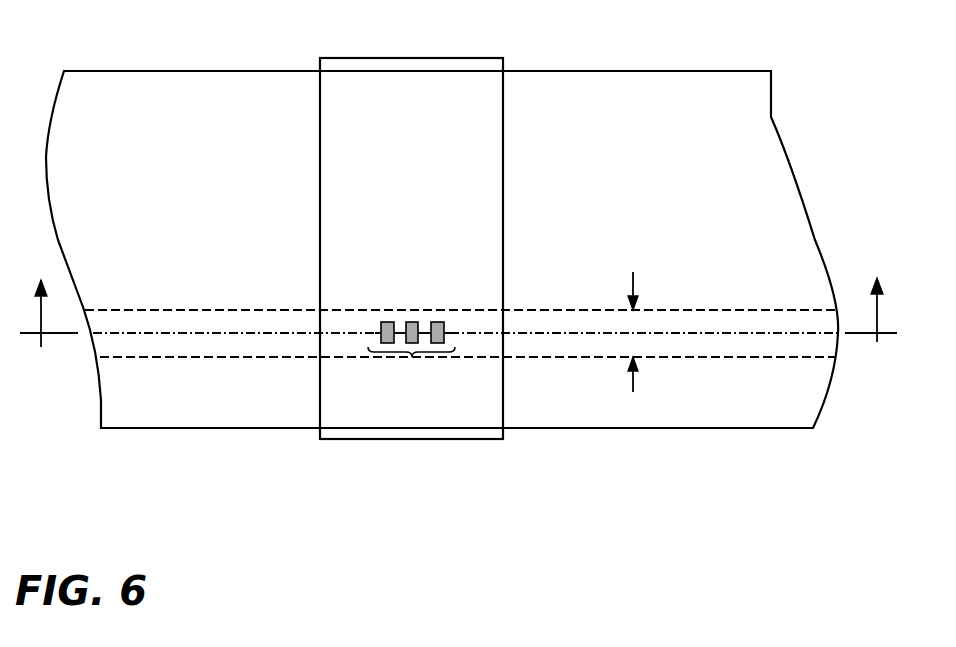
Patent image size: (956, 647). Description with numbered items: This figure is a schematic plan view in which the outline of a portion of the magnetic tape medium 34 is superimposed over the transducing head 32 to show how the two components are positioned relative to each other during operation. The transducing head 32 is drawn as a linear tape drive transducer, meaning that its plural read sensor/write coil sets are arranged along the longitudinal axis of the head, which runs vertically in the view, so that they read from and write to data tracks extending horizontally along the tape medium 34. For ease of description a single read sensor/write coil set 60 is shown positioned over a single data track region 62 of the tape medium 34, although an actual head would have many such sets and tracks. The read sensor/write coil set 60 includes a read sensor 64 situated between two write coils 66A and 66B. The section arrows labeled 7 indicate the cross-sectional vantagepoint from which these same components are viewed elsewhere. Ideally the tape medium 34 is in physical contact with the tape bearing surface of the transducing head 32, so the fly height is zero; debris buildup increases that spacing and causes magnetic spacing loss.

The transducing head 32 is at (417, 57).
The magnetic tape medium 34 is at (795, 173).
The read sensor/write coil set 60 is at (411, 318).
The data track region 62 is at (636, 285).
The read sensor 64 is at (411, 322).
The write coil 66A is at (381, 322).
The write coil 66B is at (440, 322).
The section line 7- 7 is at (458, 319).